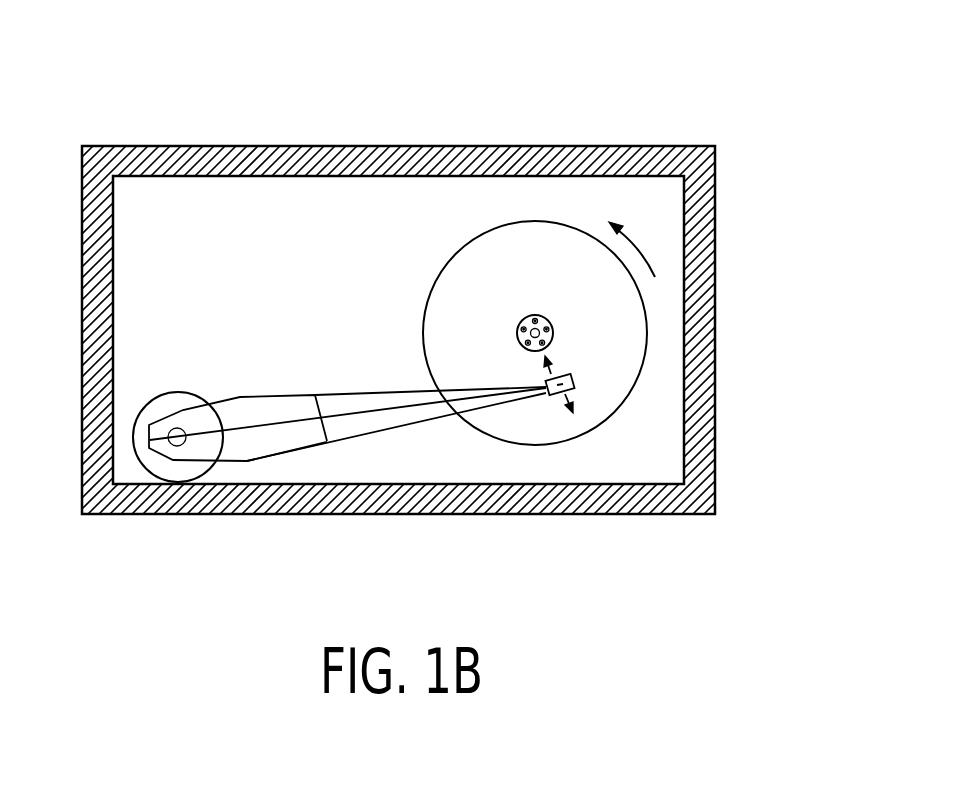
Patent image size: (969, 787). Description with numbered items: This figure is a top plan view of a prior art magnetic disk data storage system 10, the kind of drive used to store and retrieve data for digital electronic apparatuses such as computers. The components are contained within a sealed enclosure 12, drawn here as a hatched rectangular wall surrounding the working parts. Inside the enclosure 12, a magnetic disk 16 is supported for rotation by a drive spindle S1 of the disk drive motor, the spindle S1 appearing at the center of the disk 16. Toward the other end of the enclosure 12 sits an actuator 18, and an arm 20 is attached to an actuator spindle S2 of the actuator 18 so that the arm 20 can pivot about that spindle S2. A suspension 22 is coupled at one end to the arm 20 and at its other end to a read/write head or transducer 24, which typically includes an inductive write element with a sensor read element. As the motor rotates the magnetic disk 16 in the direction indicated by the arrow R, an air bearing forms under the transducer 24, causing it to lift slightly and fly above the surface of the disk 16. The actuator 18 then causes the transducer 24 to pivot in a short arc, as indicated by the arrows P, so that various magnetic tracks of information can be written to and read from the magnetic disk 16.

The magnetic disk data storage system 10 is at (582, 127).
The sealed enclosure 12 is at (338, 506).
The magnetic disk 16 is at (478, 258).
The actuator 18 is at (172, 400).
The arm 20 is at (270, 402).
The suspension 22 is at (385, 417).
The read/write head or transducer 24 is at (573, 378).
The drive spindle S1 is at (542, 318).
The actuator spindle S2 is at (185, 441).
The arrows P is at (569, 375).
The arrow R is at (634, 244).